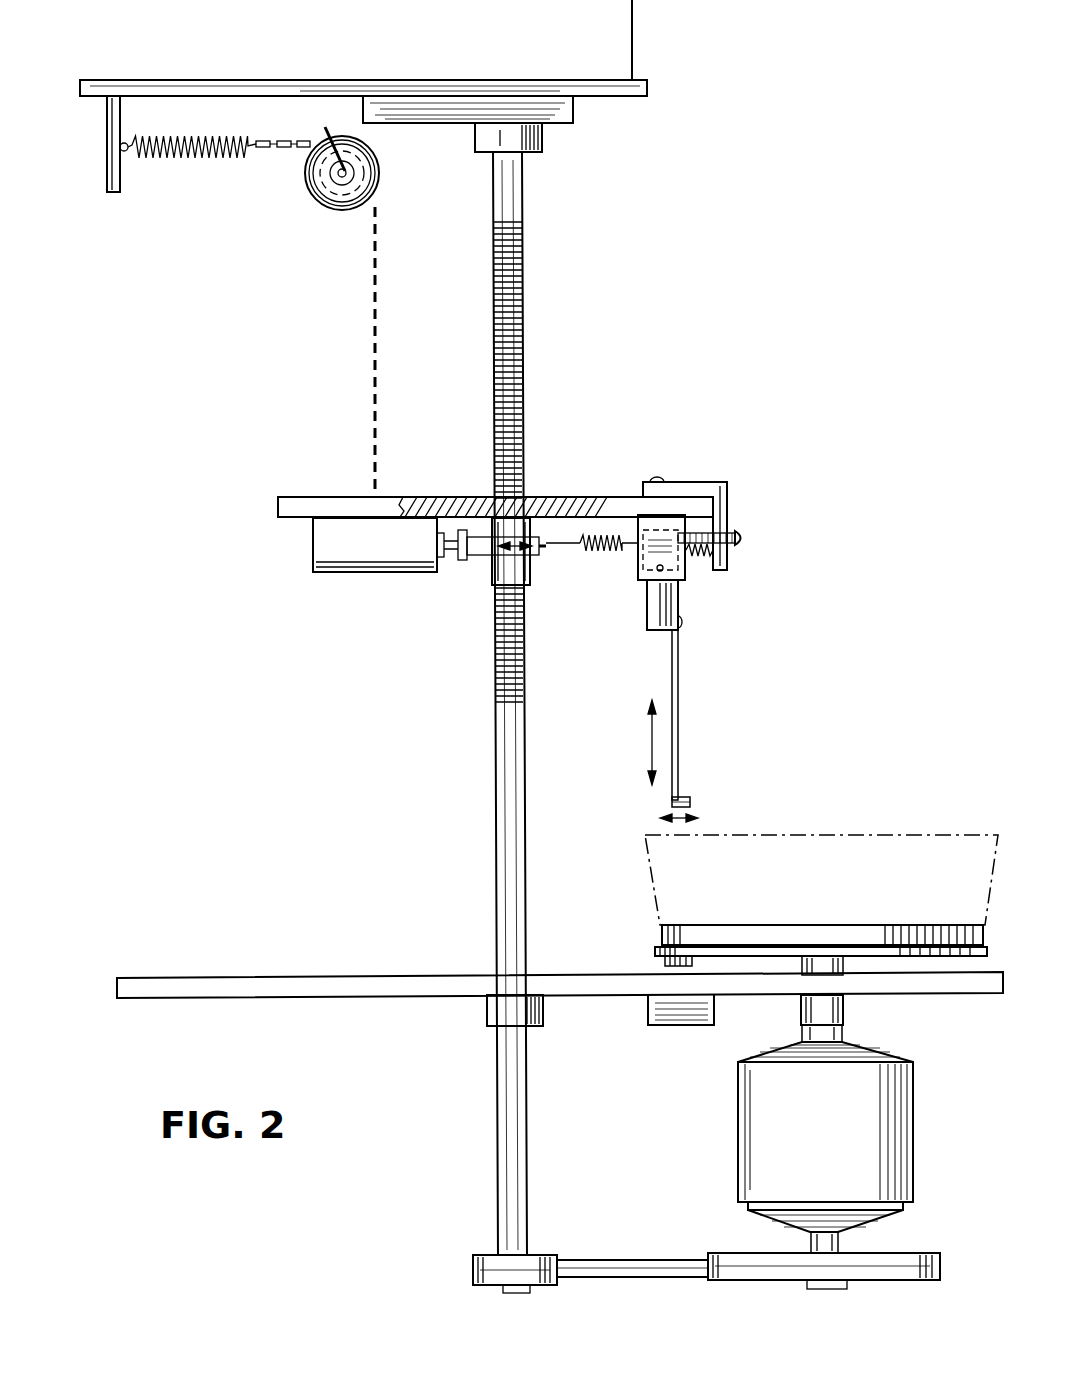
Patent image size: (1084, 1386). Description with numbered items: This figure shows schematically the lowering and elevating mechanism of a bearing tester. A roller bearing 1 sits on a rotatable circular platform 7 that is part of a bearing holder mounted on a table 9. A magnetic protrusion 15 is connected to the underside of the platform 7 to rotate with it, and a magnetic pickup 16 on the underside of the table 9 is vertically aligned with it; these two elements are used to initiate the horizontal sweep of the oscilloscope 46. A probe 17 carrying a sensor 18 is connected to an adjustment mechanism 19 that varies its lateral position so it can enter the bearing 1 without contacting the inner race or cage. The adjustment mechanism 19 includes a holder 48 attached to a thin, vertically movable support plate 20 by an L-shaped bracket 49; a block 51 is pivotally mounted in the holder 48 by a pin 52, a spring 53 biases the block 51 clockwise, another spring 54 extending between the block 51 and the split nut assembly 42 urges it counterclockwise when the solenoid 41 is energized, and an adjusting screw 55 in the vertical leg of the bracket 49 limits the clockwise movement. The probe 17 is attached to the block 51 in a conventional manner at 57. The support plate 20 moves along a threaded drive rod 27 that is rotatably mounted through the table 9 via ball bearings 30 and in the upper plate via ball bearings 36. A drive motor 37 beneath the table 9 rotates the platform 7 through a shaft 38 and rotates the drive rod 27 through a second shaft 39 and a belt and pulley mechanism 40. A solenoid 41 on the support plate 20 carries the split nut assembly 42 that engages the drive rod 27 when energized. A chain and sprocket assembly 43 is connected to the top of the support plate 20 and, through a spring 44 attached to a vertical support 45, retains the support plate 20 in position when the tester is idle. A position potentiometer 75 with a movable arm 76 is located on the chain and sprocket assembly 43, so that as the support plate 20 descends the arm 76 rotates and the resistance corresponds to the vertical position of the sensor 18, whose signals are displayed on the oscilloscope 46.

The roller bearing 1 is at (880, 832).
The rotatable circular platform 7 is at (783, 932).
The table 9 is at (430, 976).
The magnetic protrusion 15 is at (662, 960).
The magnetic pickup 16 is at (678, 1012).
The probe 17 is at (680, 696).
The sensor 18 is at (686, 797).
The adjustment mechanism 19 is at (780, 537).
The support plate 20 is at (430, 481).
The drive rod 27 is at (498, 704).
The ball bearings 30 is at (486, 1012).
The ball bearings 36 is at (522, 138).
The drive motor 37 is at (738, 1118).
The shaft 38 is at (845, 1030).
The second shaft 39 is at (812, 1242).
The belt and pulley mechanism 40 is at (626, 1260).
The solenoid 41 is at (313, 550).
The split nut assembly 42 is at (522, 572).
The chain and sprocket assembly 43 is at (330, 231).
The spring 44 is at (197, 152).
The vertical support 45 is at (108, 185).
The oscilloscope 46 is at (634, 22).
The holder 48 is at (648, 522).
The L-shaped bracket 49 is at (716, 482).
The block 51 is at (650, 614).
The pin 52 is at (656, 572).
The spring 53 is at (700, 560).
The spring 54 is at (598, 552).
The adjusting screw 55 is at (746, 536).
The probe attachment 57 is at (680, 624).
The position potentiometer 75 is at (368, 170).
The movable arm 76 is at (329, 135).